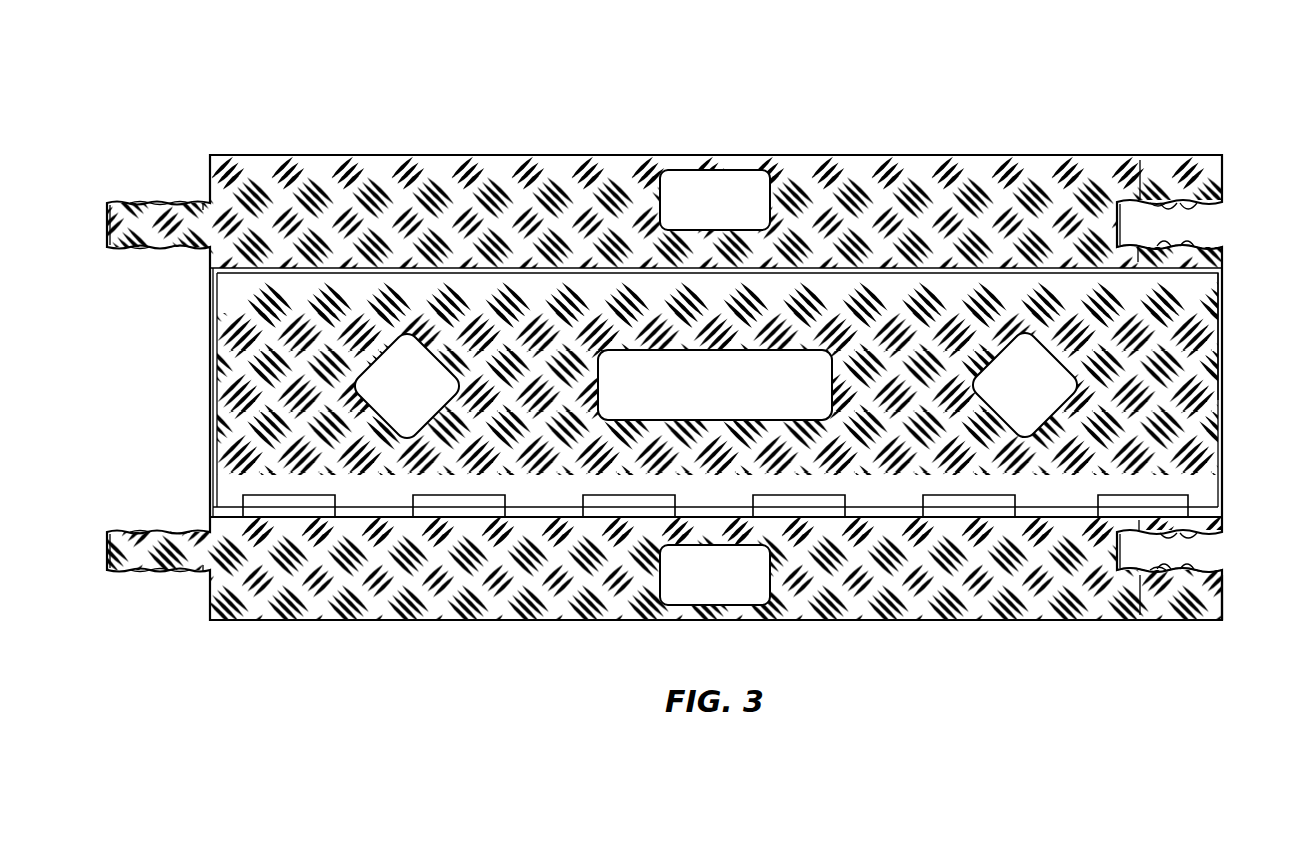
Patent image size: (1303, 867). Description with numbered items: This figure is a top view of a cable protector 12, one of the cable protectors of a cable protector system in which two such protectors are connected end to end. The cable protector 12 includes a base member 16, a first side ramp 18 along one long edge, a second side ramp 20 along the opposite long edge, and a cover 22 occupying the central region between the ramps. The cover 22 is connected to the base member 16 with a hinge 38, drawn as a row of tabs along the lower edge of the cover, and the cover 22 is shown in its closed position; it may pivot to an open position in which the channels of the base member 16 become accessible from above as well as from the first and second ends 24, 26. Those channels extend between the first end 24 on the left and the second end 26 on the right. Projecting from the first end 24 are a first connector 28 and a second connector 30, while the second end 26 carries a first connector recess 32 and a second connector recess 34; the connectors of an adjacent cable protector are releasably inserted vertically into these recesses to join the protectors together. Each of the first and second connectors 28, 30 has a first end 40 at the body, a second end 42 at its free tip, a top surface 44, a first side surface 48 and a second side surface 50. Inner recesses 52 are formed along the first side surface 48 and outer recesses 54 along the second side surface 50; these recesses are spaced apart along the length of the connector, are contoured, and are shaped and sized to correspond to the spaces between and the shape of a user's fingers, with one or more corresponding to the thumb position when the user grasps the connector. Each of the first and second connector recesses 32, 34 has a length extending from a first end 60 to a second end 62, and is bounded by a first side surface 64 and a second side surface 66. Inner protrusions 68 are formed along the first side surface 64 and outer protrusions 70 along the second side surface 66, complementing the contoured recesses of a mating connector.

The first cable protector 12 is at (955, 112).
The base member 16 is at (204, 337).
The first side ramp 18 is at (496, 155).
The second side ramp 20 is at (402, 622).
The cover 22 is at (232, 420).
The first end 24 is at (232, 622).
The second end 26 is at (1217, 615).
The first connector 28 is at (122, 195).
The second connector 30 is at (125, 590).
The first connector recess 32 is at (1224, 210).
The second connector recess 34 is at (1228, 546).
The hinge 38 is at (542, 517).
The first end 40 is at (205, 203).
The second end 42 is at (107, 228).
The top surface 44 is at (139, 203).
The first side surface 48 is at (155, 247).
The second side surface 50 is at (160, 203).
The inner recess 52 is at (196, 247).
The outer recess 54 is at (178, 203).
The first end 60 is at (1222, 244).
The second end 62 is at (1140, 202).
The first side surface 64 is at (1180, 262).
The second side surface 66 is at (1158, 203).
The inner protrusion 68 is at (1139, 247).
The outer protrusion 70 is at (1200, 203).